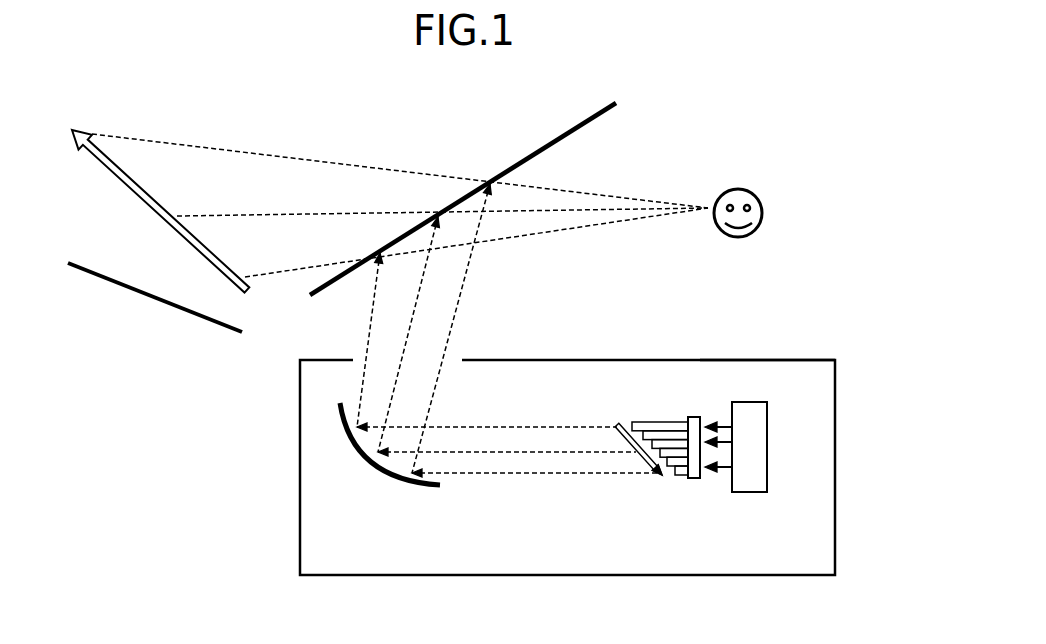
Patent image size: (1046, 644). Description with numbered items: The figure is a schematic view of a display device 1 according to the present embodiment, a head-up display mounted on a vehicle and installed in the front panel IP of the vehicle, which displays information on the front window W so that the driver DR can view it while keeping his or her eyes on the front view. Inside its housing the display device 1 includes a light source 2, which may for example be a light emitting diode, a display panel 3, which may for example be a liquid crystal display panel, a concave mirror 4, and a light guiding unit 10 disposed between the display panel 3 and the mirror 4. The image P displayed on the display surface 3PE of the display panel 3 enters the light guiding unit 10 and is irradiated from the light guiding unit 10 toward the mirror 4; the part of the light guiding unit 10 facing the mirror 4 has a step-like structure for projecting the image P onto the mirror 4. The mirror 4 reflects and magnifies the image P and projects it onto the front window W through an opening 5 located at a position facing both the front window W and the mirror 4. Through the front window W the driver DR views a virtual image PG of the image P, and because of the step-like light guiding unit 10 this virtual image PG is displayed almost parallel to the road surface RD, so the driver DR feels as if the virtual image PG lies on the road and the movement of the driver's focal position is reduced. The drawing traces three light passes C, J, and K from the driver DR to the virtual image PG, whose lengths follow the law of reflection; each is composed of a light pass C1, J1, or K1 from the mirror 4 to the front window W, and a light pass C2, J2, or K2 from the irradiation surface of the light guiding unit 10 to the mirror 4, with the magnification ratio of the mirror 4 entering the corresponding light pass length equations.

The display device 1 is at (574, 528).
The light source 2 is at (753, 494).
The display panel 3 is at (695, 480).
The display surface 3PE is at (686, 424).
The mirror 4 is at (388, 467).
The opening 5 is at (353, 358).
The light guiding unit 10 is at (702, 465).
The image P is at (617, 423).
The front panel IP is at (783, 359).
The front window W is at (593, 112).
The driver DR is at (737, 189).
The virtual image PG is at (138, 198).
The road surface RD is at (147, 294).
The light pass J is at (310, 157).
The light pass C is at (255, 213).
The light pass K is at (290, 267).
The light pass J1 is at (455, 308).
The light pass C1 is at (427, 266).
The light pass K1 is at (372, 305).
The light pass J2 is at (483, 474).
The light pass C2 is at (490, 451).
The light pass K2 is at (525, 426).